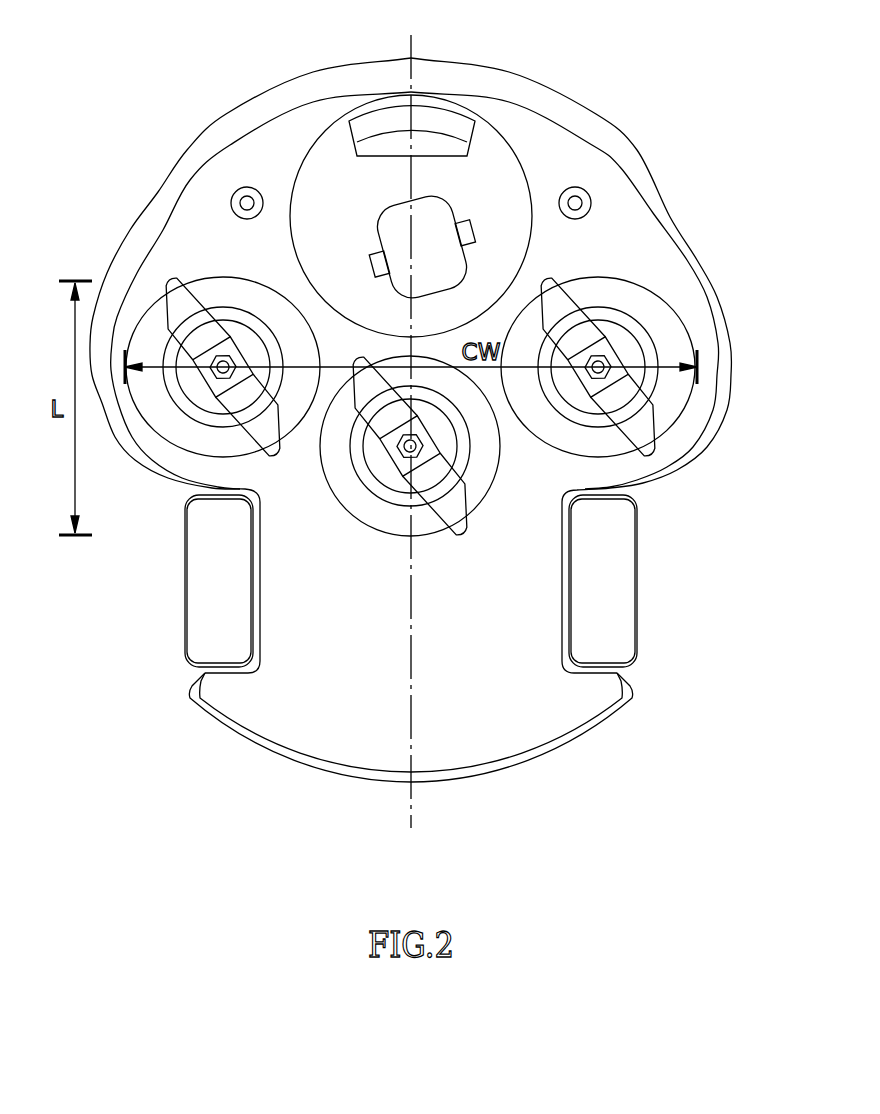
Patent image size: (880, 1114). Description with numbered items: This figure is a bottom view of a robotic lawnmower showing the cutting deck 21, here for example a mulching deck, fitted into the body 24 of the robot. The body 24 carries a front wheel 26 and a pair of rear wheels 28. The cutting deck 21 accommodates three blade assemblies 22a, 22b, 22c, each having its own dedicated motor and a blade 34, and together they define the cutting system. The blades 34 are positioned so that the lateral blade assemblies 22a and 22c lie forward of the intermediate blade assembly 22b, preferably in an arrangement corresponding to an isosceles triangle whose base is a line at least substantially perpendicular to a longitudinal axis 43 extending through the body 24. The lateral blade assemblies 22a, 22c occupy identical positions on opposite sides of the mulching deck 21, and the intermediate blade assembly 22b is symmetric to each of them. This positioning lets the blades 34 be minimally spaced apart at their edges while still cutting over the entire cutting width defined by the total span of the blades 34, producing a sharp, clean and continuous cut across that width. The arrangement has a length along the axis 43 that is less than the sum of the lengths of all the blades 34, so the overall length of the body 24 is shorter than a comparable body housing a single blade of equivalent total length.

The cutting deck 21 is at (282, 166).
The lateral blade assembly 22a is at (643, 331).
The intermediate blade assembly 22b is at (375, 486).
The lateral blade assembly 22c is at (176, 408).
The body 24 is at (674, 227).
The front wheel 26 is at (443, 215).
The rear wheels 28 is at (193, 600).
The blades 34 is at (176, 290).
The longitudinal axis 43 is at (412, 805).